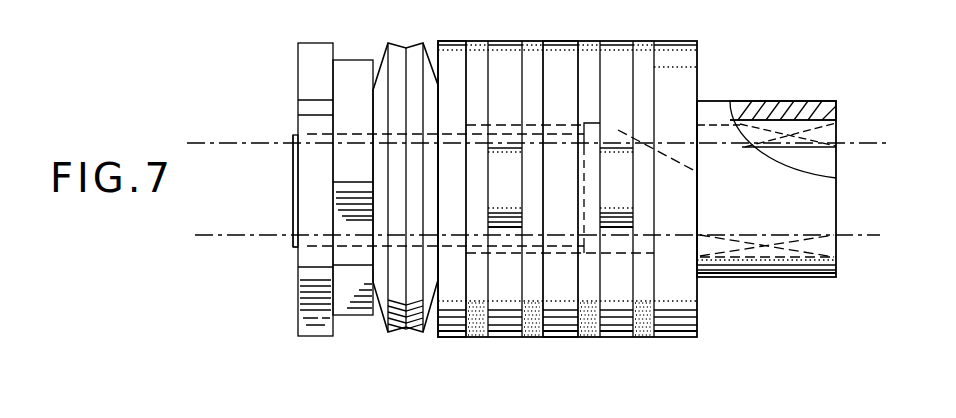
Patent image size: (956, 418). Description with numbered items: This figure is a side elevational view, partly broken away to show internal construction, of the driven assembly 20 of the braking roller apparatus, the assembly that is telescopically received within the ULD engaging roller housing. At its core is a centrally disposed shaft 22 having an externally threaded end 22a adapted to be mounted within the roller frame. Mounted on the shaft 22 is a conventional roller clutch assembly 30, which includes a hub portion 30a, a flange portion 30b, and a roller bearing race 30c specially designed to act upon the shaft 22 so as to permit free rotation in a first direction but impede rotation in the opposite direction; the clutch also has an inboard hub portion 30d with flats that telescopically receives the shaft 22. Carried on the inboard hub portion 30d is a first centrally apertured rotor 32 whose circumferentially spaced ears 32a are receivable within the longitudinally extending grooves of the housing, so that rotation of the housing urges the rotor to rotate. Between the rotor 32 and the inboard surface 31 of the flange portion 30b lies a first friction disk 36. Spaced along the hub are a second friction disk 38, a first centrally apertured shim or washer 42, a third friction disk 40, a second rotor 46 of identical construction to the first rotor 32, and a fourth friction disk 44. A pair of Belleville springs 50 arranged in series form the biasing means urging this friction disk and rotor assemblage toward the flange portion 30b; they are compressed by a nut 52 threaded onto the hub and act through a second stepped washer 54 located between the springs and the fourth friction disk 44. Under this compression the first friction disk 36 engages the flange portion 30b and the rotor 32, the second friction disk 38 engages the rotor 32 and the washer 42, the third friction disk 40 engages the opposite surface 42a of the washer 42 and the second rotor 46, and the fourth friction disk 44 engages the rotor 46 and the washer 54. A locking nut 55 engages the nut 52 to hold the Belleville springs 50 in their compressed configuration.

The driven assembly 20 is at (268, 107).
The shaft 22 is at (205, 265).
The first externally threaded end 22a is at (255, 332).
The roller clutch assembly 30 is at (679, 35).
The hub portion 30a is at (805, 278).
The flange portion 30b is at (700, 322).
The roller bearing race 30c is at (808, 130).
The inboard hub portion 30d is at (706, 172).
The inboard surface of flange 31 is at (656, 82).
The first rotor 32 is at (618, 48).
The ears 32a is at (612, 199).
The first friction disk 36 is at (648, 340).
The second friction disk 38 is at (588, 340).
The third friction disk 40 is at (534, 340).
The first washer 42 is at (558, 48).
The opposite surface of washer 42a is at (510, 210).
The fourth friction disk 44 is at (472, 340).
The second rotor 46 is at (502, 48).
The Belleville springs 50 is at (410, 335).
The nut 52 is at (353, 318).
The second stepped washer 54 is at (452, 48).
The locking nut 55 is at (300, 320).